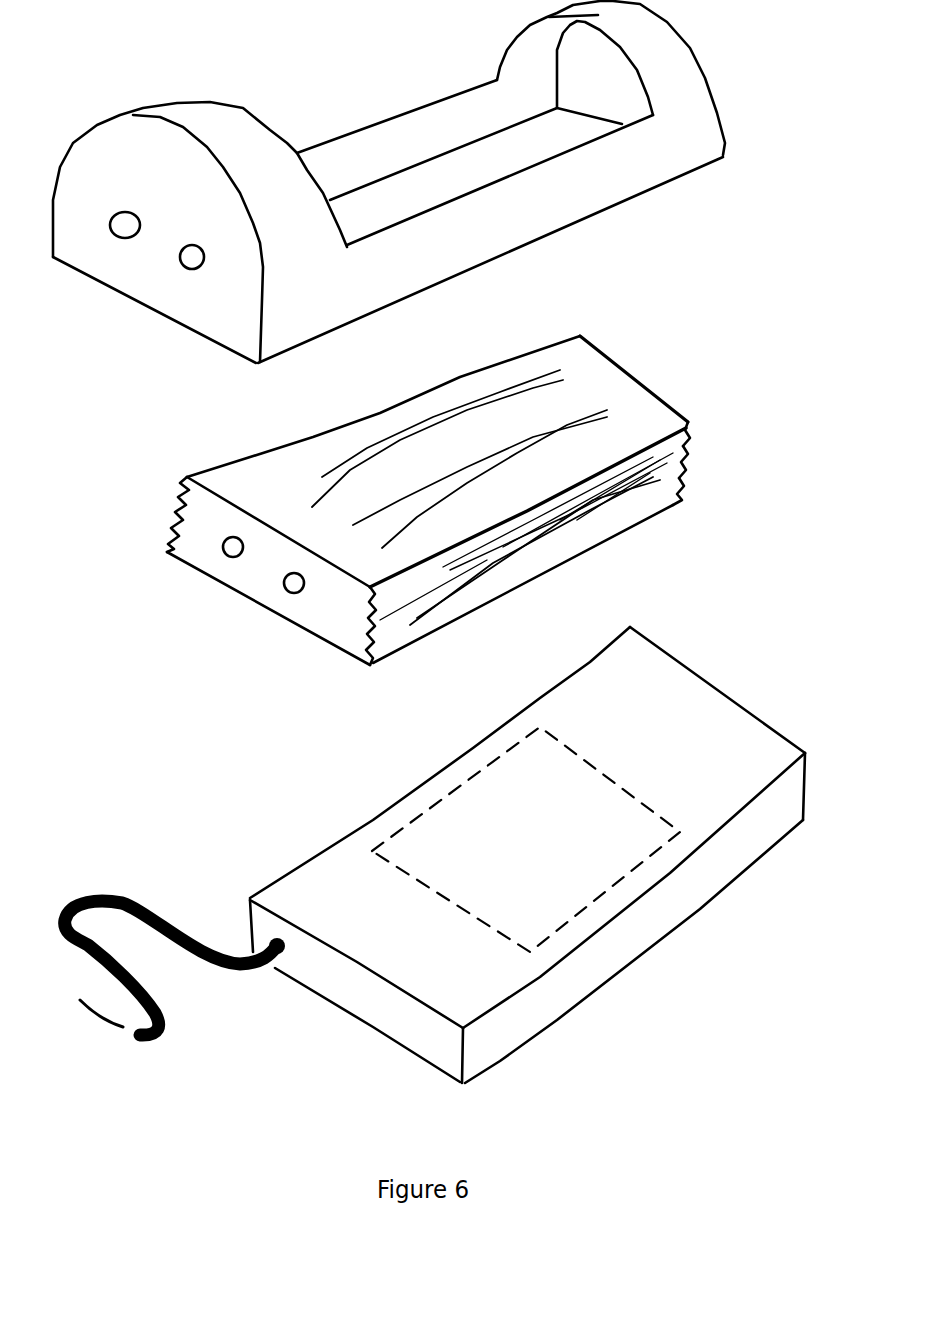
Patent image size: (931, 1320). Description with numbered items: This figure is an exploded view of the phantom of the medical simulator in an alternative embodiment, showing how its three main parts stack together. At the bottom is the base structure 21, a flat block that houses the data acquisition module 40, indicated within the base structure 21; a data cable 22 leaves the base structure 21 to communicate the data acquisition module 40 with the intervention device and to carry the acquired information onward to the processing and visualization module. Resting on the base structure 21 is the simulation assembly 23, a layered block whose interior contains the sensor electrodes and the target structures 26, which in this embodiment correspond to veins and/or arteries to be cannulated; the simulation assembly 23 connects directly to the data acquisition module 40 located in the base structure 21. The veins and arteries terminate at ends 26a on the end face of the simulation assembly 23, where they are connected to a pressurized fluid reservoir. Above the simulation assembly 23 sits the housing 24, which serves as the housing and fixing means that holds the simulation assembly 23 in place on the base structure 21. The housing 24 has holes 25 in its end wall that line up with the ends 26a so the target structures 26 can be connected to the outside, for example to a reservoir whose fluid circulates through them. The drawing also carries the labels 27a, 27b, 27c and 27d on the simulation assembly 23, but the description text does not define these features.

The base structure 21 is at (752, 690).
The data cable 22 is at (198, 1020).
The simulation assembly 23 is at (222, 455).
The housing 24 is at (405, 103).
The holes 25 is at (136, 206).
The target structures 26 is at (558, 423).
The ends 26a is at (222, 570).
The top surface 27a is at (395, 413).
The first side edge 27b is at (698, 417).
The second side edge 27c is at (695, 463).
The third side edge 27d is at (685, 495).
The data acquisition module 40 is at (640, 773).